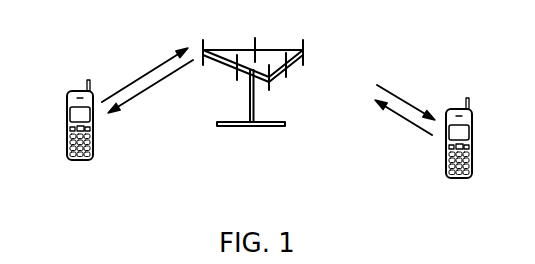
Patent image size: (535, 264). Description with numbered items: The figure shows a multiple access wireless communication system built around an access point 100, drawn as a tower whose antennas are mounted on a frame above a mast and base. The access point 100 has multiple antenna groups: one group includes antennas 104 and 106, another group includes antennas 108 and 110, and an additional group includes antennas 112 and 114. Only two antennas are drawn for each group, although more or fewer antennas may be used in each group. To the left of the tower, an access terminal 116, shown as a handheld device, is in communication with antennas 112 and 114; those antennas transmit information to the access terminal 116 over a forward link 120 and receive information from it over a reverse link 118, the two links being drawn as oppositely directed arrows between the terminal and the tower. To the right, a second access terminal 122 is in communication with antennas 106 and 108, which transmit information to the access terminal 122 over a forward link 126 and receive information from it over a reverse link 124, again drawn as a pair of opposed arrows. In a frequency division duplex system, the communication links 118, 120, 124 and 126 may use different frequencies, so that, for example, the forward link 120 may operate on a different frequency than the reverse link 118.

The access point 100 is at (253, 126).
The antenna 104 is at (271, 85).
The antenna 106 is at (288, 68).
The antenna 108 is at (305, 50).
The antenna 110 is at (256, 38).
The antenna 112 is at (203, 43).
The antenna 114 is at (237, 75).
The access terminal 116 is at (67, 93).
The reverse link 118 is at (150, 70).
The forward link 120 is at (143, 92).
The access terminal 122 is at (475, 130).
The reverse link 124 is at (410, 123).
The forward link 126 is at (405, 102).